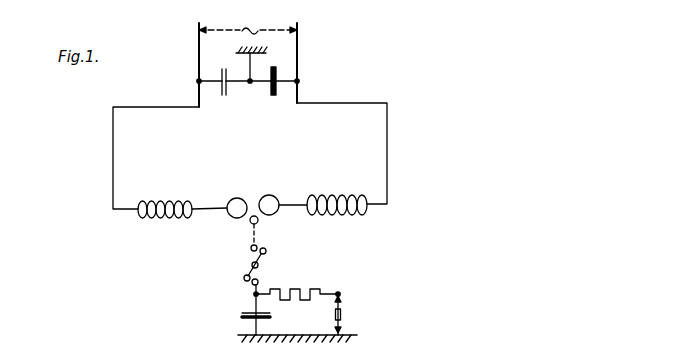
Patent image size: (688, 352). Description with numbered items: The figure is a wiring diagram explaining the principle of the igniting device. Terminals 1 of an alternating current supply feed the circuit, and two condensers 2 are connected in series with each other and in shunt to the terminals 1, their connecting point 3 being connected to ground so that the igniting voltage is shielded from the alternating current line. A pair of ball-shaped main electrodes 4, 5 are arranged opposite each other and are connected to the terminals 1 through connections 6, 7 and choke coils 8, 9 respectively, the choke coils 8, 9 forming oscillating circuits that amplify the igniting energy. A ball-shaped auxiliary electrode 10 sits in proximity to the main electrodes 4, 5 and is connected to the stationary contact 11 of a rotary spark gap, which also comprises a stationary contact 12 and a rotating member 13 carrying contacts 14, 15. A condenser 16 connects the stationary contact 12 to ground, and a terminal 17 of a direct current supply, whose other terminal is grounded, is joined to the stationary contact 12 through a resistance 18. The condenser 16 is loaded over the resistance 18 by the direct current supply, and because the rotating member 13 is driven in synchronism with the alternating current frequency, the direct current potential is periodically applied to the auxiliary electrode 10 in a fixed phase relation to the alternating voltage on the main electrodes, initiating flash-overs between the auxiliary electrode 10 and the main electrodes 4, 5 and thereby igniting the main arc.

The terminals of an alternating current supply 1 is at (196, 54).
The condensers 2 is at (268, 95).
The connecting point of the condensers 3 is at (262, 33).
The main electrode 4 is at (227, 214).
The main electrode 5 is at (277, 210).
The connection 6 is at (143, 106).
The connection 7 is at (359, 100).
The choke coil 8 is at (161, 218).
The choke coil 9 is at (361, 209).
The auxiliary electrode 10 is at (258, 224).
The stationary contact 11 is at (250, 250).
The stationary contact 12 is at (259, 282).
The rotating member 13 is at (259, 263).
The contact 14 is at (245, 281).
The contact 15 is at (267, 251).
The condenser 16 is at (242, 318).
The terminal of a direct current supply 17 is at (343, 295).
The resistance 18 is at (311, 289).